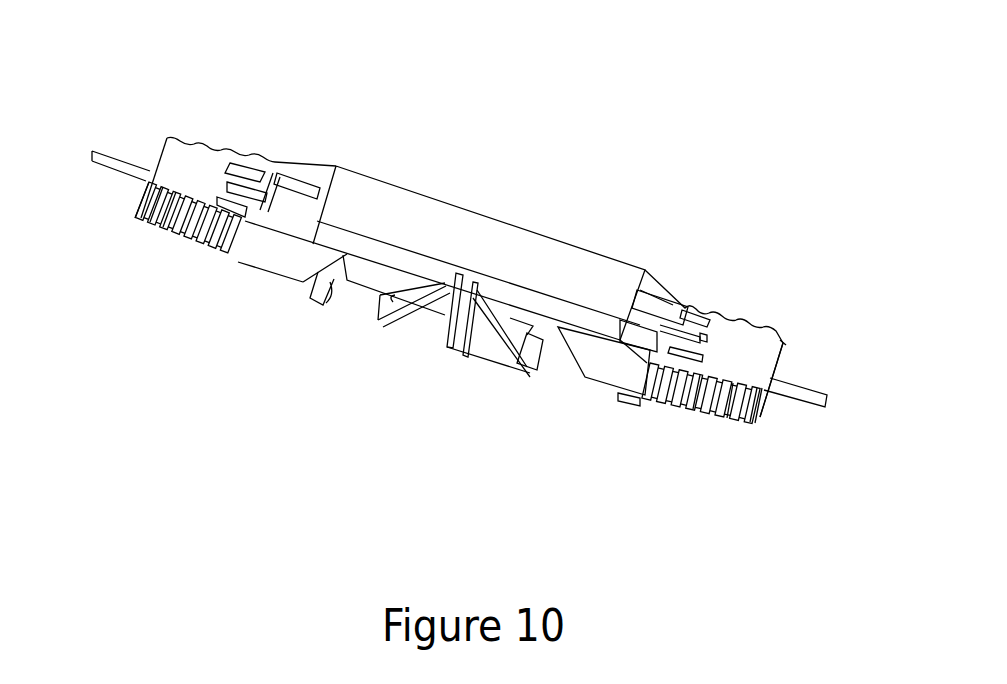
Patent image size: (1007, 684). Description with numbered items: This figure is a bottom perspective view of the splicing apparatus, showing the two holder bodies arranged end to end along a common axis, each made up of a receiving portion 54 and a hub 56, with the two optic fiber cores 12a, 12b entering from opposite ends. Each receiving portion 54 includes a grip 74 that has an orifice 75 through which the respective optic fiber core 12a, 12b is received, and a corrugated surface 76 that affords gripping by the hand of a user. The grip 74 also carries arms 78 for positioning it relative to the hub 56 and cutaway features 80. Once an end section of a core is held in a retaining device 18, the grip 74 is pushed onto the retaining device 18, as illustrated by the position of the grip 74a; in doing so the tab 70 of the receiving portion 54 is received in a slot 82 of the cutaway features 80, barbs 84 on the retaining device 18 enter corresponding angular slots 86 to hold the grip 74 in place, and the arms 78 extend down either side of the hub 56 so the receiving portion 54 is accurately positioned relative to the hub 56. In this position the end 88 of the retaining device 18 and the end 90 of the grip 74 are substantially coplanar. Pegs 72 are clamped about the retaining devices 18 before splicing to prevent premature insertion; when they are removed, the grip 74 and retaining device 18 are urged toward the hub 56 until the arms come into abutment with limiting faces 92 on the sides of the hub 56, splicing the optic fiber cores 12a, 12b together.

The optic fiber core 12a is at (822, 395).
The optic fiber core 12b is at (122, 166).
The retaining device 18 is at (280, 175).
The receiving portion 54 is at (193, 242).
The hub 56 is at (373, 280).
The tab 70 is at (679, 330).
The peg 72 is at (324, 298).
The grip 74 is at (143, 220).
The grip 74a is at (693, 400).
The orifice 75 is at (128, 192).
The corrugated surface 76 is at (162, 222).
The arm 78 is at (313, 172).
The cutaway feature 80 is at (225, 180).
The slot 82 is at (745, 318).
The barb 84 is at (317, 195).
The angular slot 86 is at (248, 173).
The end of the retaining device 88 is at (778, 373).
The end of the grip 90 is at (786, 340).
The limiting face 92 is at (400, 303).